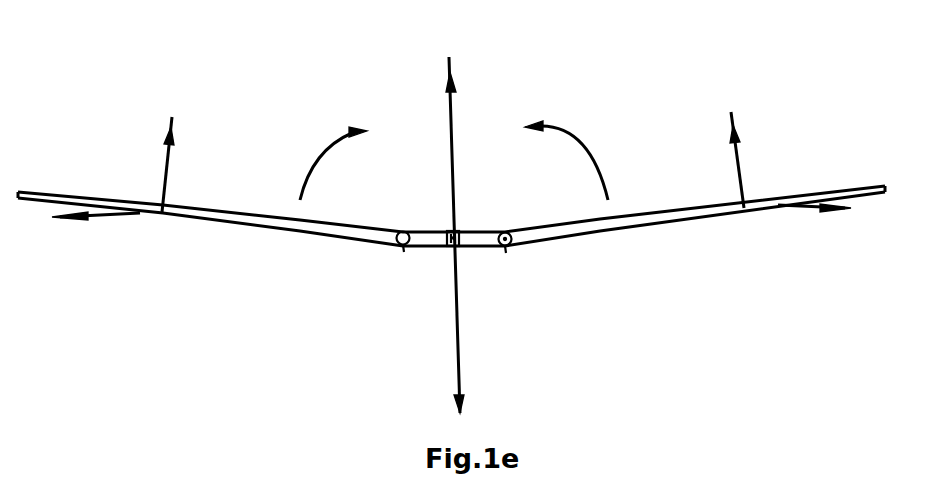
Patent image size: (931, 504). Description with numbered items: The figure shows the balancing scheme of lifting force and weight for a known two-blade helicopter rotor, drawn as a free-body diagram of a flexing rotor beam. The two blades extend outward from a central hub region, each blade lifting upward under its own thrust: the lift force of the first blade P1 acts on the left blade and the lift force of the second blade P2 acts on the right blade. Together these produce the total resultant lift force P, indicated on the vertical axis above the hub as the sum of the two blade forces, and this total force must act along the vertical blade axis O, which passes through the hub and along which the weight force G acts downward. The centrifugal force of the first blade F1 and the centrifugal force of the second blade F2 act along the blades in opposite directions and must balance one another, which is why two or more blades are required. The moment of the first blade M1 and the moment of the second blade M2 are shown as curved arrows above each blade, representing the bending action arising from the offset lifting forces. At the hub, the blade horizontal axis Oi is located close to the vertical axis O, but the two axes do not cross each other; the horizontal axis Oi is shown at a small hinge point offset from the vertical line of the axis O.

The total resultant lift force P is at (499, 234).
The lift force of first blade P1 is at (190, 151).
The lift force of second blade P2 is at (756, 155).
The centrifugal force of first blade F1 is at (96, 236).
The centrifugal force of second blade F2 is at (814, 231).
The moment of first blade M1 is at (330, 154).
The moment of second blade M2 is at (575, 160).
The blade axis O is at (452, 315).
The blade horizontal axis Oi is at (511, 244).
The weight force G is at (444, 394).